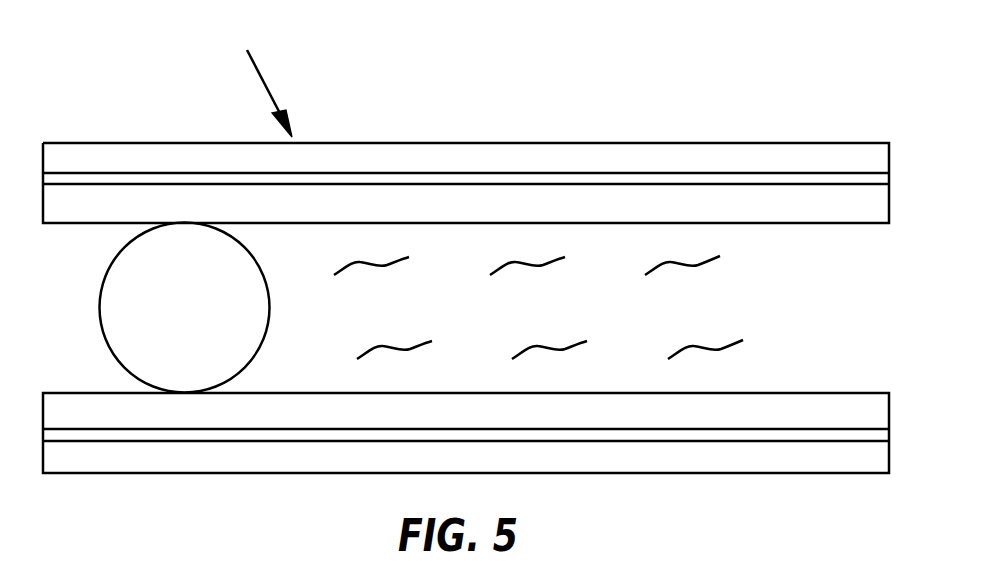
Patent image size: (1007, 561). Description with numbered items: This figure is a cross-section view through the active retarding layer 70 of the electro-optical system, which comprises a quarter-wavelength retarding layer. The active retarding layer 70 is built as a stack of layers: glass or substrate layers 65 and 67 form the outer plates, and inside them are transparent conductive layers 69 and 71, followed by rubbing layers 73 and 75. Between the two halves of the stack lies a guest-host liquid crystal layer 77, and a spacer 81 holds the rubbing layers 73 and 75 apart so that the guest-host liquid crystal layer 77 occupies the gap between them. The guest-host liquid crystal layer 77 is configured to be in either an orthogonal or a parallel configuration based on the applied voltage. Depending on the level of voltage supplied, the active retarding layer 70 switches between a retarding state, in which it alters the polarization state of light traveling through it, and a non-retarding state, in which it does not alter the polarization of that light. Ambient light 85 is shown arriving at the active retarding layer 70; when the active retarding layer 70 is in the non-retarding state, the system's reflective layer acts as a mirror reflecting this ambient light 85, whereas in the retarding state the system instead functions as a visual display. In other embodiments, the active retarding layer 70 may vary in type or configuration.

The active retarding layer 70 is at (628, 82).
The glass or substrate layer 65 is at (850, 153).
The transparent conductive layer 69 is at (880, 178).
The rubbing layer 73 is at (850, 212).
The rubbing layer 75 is at (871, 405).
The transparent conductive layer 71 is at (880, 437).
The glass or substrate layer 67 is at (873, 460).
The spacer 81 is at (100, 330).
The guest-host liquid crystal layer 77 is at (695, 265).
The ambient light 85 is at (272, 95).